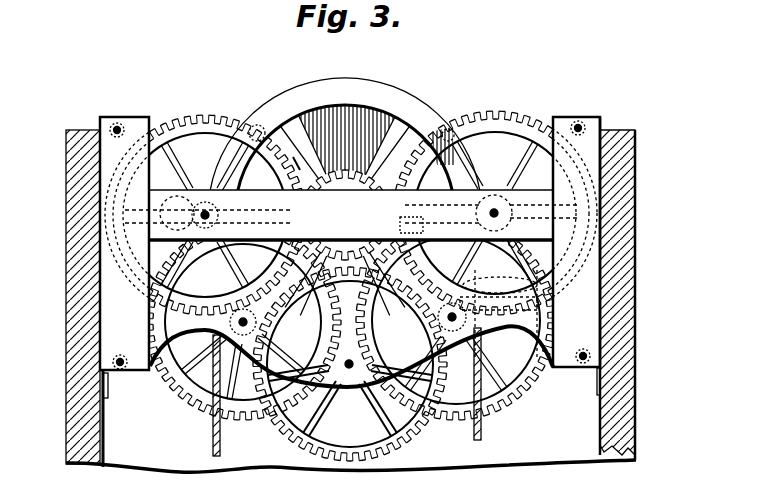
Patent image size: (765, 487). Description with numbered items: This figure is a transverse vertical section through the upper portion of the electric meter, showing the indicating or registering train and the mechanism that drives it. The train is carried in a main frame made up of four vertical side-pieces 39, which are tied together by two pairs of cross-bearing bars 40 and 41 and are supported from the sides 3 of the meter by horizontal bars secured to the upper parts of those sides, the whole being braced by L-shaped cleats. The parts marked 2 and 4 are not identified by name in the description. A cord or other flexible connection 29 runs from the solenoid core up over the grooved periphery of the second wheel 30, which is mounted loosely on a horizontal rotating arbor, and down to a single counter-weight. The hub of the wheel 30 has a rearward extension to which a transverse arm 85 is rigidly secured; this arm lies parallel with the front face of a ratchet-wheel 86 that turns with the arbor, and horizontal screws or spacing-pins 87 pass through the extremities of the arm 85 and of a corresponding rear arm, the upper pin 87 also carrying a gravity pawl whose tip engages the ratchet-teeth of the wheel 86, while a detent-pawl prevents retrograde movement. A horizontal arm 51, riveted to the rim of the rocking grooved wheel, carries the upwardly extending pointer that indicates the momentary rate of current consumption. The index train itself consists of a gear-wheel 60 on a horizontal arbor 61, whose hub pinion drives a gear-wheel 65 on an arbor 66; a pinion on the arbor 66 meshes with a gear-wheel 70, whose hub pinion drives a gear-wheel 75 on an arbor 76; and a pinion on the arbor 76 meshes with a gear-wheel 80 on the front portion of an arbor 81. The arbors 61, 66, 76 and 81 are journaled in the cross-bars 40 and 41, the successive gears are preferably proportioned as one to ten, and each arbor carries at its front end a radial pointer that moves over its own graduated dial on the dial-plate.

The frame plate 2 is at (172, 441).
The sides 3 is at (100, 367).
The base 4 is at (351, 473).
The cord 29 is at (213, 454).
The second wheel 30 is at (387, 91).
The vertical side-pieces 39 is at (351, 213).
The cross-bearing bars 40 is at (543, 204).
The cross-bearing bars 41 is at (438, 325).
The horizontal arm 51 is at (247, 118).
The gear-wheel 60 is at (210, 131).
The horizontal arbor 61 is at (210, 214).
The gear-wheel 65 is at (247, 410).
The horizontal arbor 66 is at (243, 323).
The gear-wheel 70 is at (341, 449).
The gear-wheel 75 is at (508, 392).
The horizontal arbor 76 is at (465, 308).
The gear-wheel 80 is at (515, 131).
The horizontal arbor 81 is at (503, 218).
The transverse arm 85 is at (293, 157).
The ratchet-wheel 86 is at (347, 140).
The spacing-pins 87 is at (452, 127).